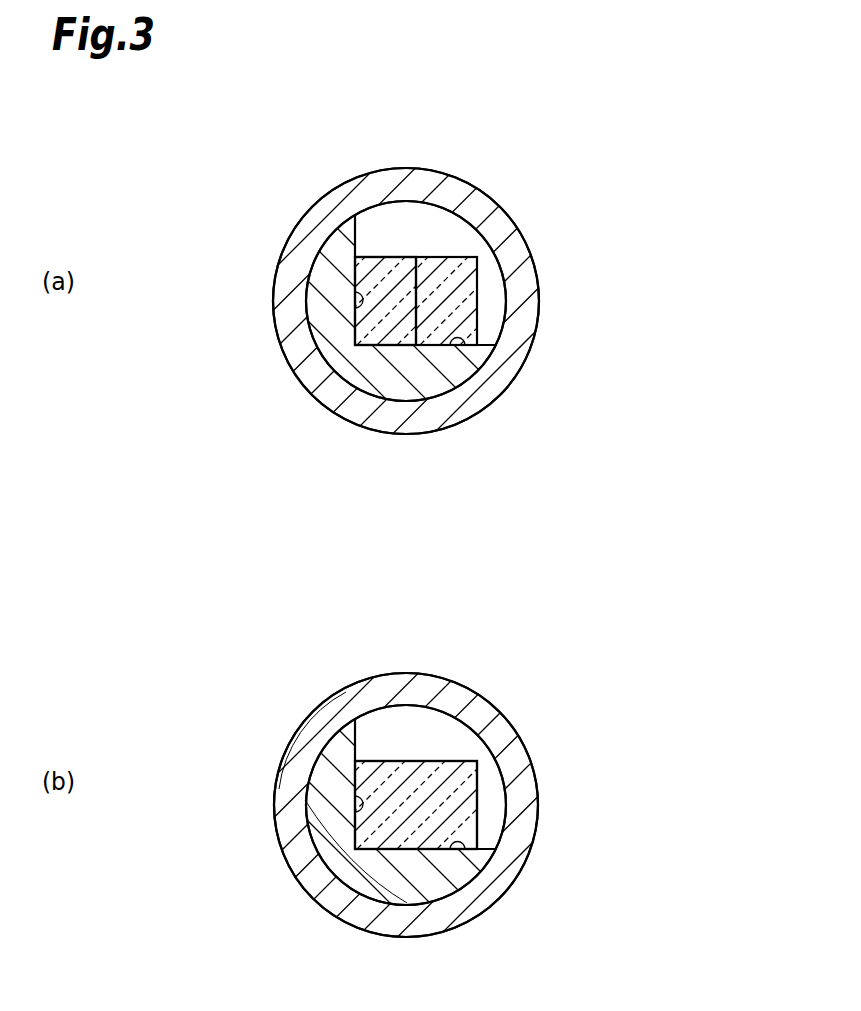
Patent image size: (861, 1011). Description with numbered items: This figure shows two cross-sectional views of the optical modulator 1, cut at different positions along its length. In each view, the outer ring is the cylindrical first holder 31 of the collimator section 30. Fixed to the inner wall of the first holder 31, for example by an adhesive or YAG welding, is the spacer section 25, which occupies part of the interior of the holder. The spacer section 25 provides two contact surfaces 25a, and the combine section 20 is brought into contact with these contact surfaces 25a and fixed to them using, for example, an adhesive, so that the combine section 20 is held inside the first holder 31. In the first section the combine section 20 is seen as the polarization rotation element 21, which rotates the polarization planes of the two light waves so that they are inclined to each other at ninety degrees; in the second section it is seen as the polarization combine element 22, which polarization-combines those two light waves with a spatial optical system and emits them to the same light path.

The device assembly 1 is at (607, 137).
The combine section 20 is at (480, 308).
The polarization rotation element 21 is at (385, 262).
The polarization combine element 22 is at (385, 766).
The spacer section 25 is at (433, 380).
The contact surfaces 25a is at (353, 291).
The collimator section 30 is at (478, 187).
The first holder 31 is at (330, 393).